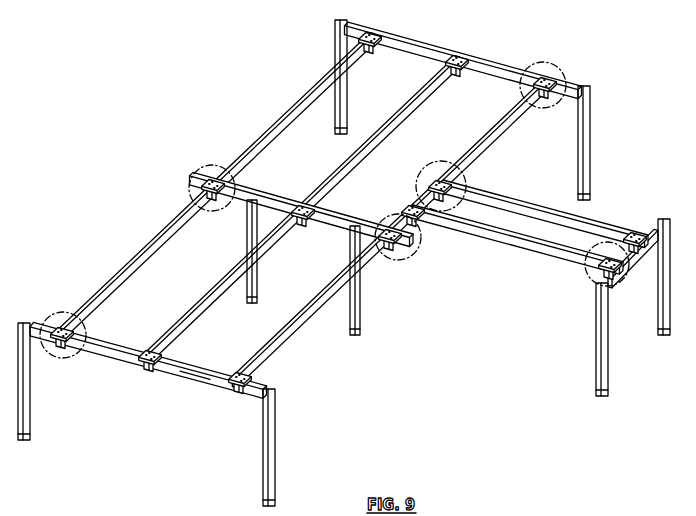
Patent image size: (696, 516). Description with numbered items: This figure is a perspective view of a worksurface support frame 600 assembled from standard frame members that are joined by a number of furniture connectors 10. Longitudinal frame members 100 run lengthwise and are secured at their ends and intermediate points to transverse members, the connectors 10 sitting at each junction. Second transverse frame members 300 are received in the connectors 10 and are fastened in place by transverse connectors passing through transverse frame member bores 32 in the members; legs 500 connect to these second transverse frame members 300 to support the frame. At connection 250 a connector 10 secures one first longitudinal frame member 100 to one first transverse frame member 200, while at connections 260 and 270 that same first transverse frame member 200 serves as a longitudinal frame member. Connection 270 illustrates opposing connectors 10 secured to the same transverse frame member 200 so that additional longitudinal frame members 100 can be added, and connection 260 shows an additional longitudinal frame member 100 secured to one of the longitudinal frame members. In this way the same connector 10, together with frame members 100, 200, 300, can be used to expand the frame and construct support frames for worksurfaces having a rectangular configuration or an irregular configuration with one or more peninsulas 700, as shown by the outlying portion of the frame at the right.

The furniture connector 10 is at (380, 33).
The transverse frame member bore 32 is at (190, 362).
The longitudinal frame member 100 is at (416, 117).
The first transverse frame member 200 is at (389, 234).
The connection 250 is at (468, 180).
The connection 260 is at (568, 72).
The connection 270 is at (420, 250).
The second transverse frame member 300 is at (490, 57).
The leg 500 is at (349, 84).
The worksurface support frame 600 is at (596, 37).
The peninsula 700 is at (510, 320).